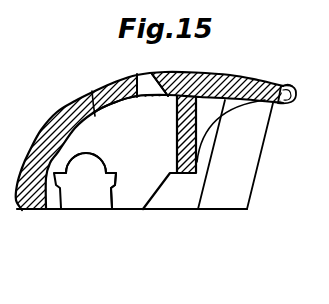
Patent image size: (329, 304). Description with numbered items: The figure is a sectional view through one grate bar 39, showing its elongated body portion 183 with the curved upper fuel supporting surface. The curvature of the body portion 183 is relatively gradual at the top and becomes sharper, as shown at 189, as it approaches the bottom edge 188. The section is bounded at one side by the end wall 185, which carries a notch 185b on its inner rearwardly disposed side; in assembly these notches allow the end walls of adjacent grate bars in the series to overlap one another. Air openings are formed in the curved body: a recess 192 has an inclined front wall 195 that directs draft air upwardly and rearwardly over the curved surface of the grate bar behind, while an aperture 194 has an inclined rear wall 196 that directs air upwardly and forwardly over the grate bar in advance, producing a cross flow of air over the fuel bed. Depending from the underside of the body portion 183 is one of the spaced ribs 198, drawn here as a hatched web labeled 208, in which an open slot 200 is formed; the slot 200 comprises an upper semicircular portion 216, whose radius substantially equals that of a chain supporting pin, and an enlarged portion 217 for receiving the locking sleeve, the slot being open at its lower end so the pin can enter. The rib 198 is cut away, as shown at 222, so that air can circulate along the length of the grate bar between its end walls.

The sharper curvature of body portion 189 is at (57, 111).
The spaced ribs 198 is at (92, 92).
The bottom edge 188 is at (31, 211).
The apertures 194 is at (144, 75).
The rear wall of aperture 196 is at (153, 75).
The elongated body portion 183 is at (113, 104).
The stem web 208 is at (177, 152).
The enlarged portion of slot 217 is at (114, 181).
The open slots 200 is at (90, 190).
The upper semicircular portion of slot 216 is at (99, 163).
The end wall 185 is at (169, 199).
The notch 185b is at (232, 188).
The recess 192 is at (276, 105).
The cutaway of ribs 222 is at (214, 124).
The inclined front wall of recess 195 is at (300, 92).
The grate bar 39 is at (290, 85).